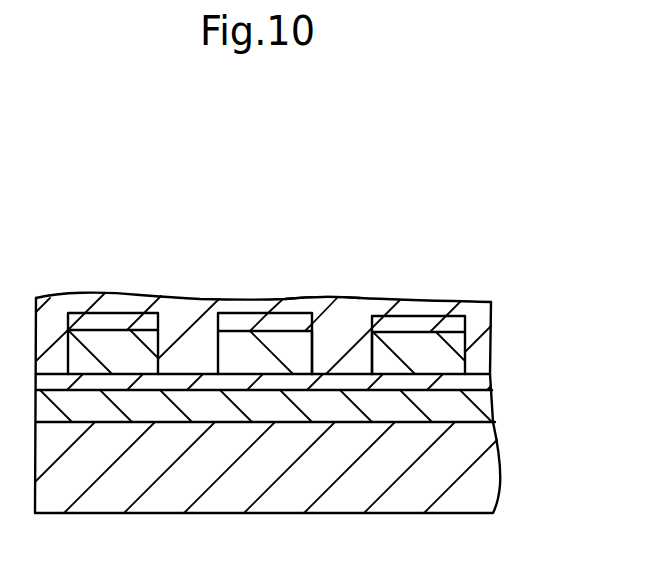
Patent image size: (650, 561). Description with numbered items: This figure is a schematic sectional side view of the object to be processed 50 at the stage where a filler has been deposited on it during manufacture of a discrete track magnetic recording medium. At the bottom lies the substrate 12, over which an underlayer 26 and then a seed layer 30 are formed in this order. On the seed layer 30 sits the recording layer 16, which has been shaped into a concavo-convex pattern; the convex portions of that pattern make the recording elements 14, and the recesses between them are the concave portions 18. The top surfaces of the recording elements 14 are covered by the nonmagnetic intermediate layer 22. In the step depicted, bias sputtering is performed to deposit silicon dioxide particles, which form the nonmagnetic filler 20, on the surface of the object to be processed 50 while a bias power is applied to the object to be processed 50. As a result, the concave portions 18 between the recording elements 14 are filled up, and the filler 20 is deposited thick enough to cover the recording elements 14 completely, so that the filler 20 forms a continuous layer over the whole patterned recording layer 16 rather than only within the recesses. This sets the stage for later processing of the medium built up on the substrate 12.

The object to be processed 50 is at (276, 187).
The substrate 12 is at (502, 465).
The recording elements 14 is at (415, 347).
The recording layer 16 is at (500, 356).
The concave portions 18 is at (346, 322).
The nonmagnetic filler 20 is at (333, 298).
The nonmagnetic intermediate layer 22 is at (452, 322).
The underlayer 26 is at (497, 408).
The seed layer 30 is at (492, 383).